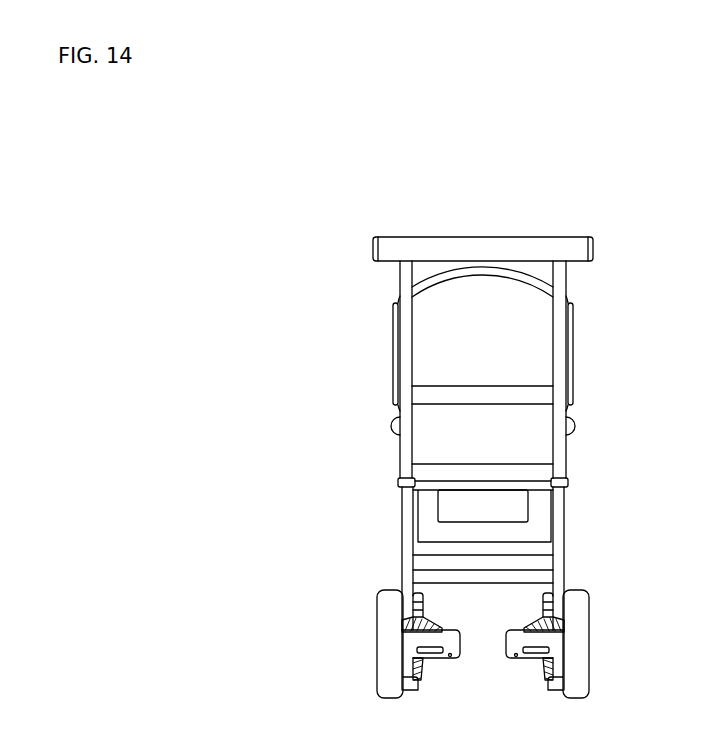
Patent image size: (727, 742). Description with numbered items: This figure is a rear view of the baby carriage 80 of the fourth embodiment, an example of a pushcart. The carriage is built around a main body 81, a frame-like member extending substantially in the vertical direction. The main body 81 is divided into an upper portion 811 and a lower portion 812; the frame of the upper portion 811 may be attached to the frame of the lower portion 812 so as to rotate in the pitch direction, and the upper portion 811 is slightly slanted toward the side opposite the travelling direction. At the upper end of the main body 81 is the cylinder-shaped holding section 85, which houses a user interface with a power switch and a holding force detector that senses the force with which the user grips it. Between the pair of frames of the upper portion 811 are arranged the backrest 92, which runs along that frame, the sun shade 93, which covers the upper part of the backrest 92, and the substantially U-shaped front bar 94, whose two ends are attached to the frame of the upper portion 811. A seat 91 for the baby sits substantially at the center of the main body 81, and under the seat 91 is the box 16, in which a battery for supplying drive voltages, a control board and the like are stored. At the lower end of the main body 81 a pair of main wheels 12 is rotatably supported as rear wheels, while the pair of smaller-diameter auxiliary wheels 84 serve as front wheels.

The baby carriage 80 is at (597, 217).
The holding section 85 is at (587, 247).
The sun shade 93 is at (563, 282).
The main body 81 is at (483, 475).
The upper portion of the main body 811 is at (400, 328).
The lower portion of the main body 812 is at (402, 555).
The backrest 92 is at (543, 365).
The front bar 94 is at (390, 428).
The seat 91 is at (542, 465).
The box 16 is at (520, 507).
The main wheel 12 is at (383, 652).
The auxiliary wheel 84 is at (400, 687).